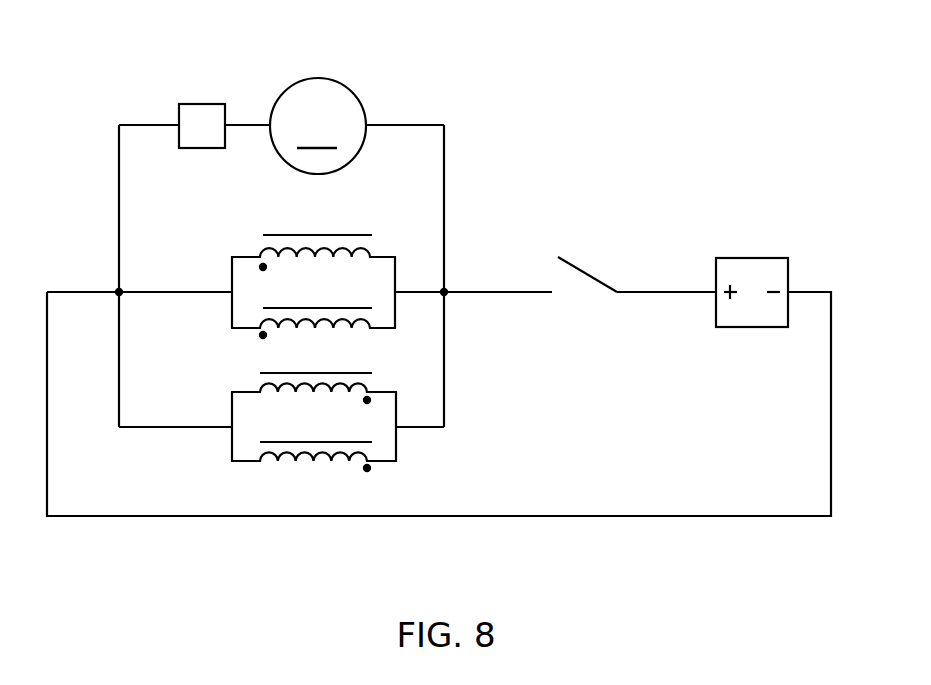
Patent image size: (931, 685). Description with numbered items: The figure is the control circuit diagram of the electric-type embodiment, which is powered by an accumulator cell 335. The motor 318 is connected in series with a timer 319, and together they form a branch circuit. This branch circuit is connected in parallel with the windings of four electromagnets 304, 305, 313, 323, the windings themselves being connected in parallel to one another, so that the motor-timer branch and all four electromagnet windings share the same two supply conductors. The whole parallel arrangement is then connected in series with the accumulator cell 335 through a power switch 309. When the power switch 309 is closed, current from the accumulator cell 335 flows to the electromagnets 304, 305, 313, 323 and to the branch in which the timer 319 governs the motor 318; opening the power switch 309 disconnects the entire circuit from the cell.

The timer 319 is at (187, 107).
The motor 318 is at (317, 80).
The electromagnet 305 is at (300, 245).
The electromagnet 313 is at (290, 305).
The electromagnet 304 is at (295, 385).
The electromagnet 323 is at (295, 440).
The power switch 309 is at (585, 253).
The accumulator cell 335 is at (751, 265).